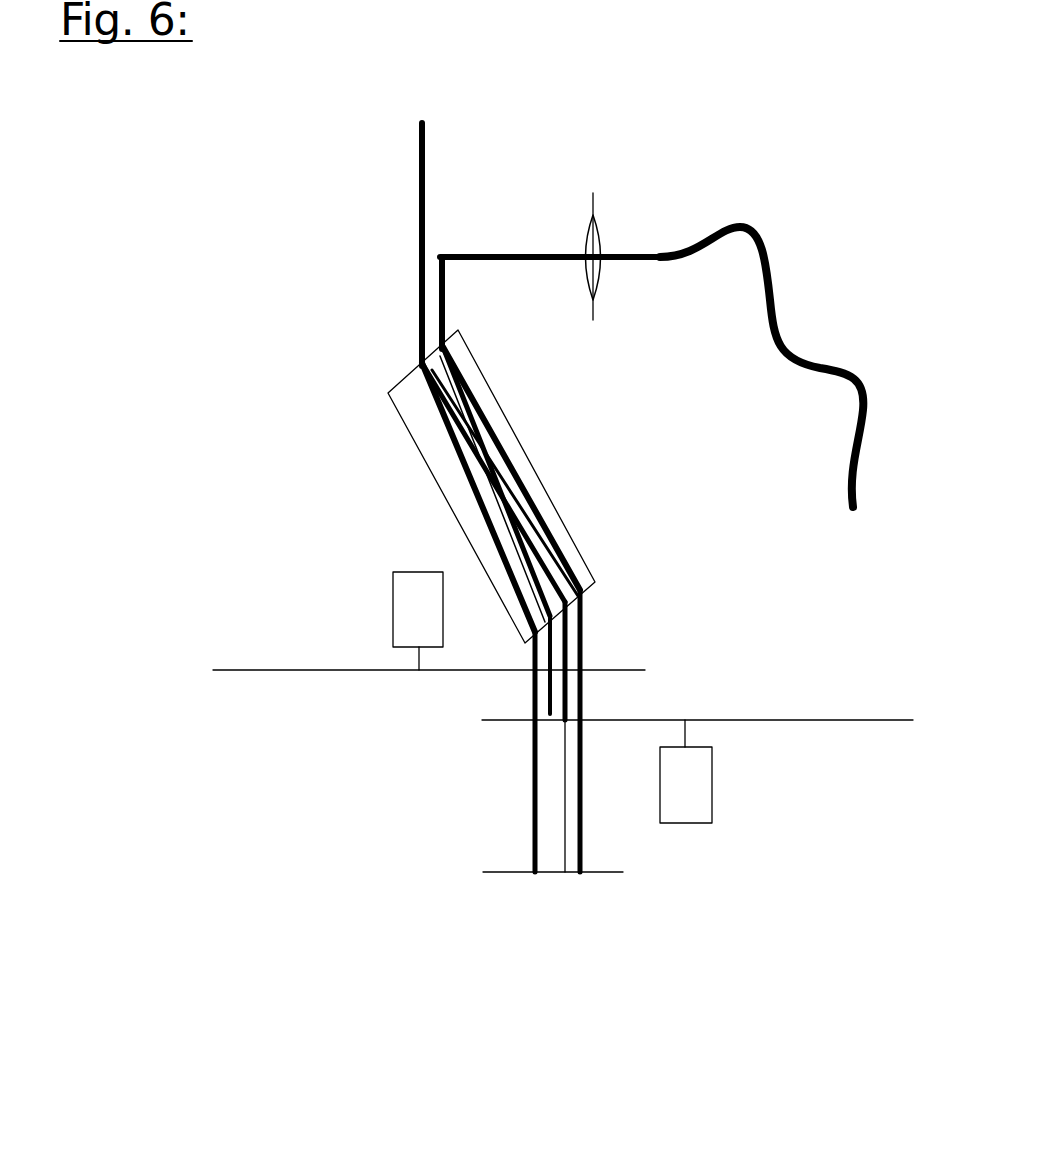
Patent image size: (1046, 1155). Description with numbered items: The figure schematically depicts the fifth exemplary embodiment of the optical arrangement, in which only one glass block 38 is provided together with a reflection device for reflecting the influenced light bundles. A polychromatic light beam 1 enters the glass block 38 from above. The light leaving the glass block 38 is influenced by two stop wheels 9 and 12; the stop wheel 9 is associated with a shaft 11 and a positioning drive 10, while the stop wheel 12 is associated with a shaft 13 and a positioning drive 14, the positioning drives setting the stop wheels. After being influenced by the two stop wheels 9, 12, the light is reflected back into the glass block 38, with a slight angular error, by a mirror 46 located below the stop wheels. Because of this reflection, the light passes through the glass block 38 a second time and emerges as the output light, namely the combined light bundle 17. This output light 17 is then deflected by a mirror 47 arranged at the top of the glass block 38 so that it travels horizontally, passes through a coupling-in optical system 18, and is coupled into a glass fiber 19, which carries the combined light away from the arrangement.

The polychromatic light beam 1 is at (430, 175).
The mirror 47 is at (430, 268).
The combined light bundle 17 is at (444, 293).
The coupling-in optical system 18 is at (607, 250).
The glass fiber 19 is at (812, 370).
The glass block 38 is at (418, 408).
The mirror 46 is at (510, 873).
The positioning drive 10 is at (403, 600).
The shaft 11 is at (417, 662).
The stop wheel 9 is at (263, 675).
The stop wheel 12 is at (840, 723).
The shaft 13 is at (687, 740).
The positioning drive 14 is at (700, 798).